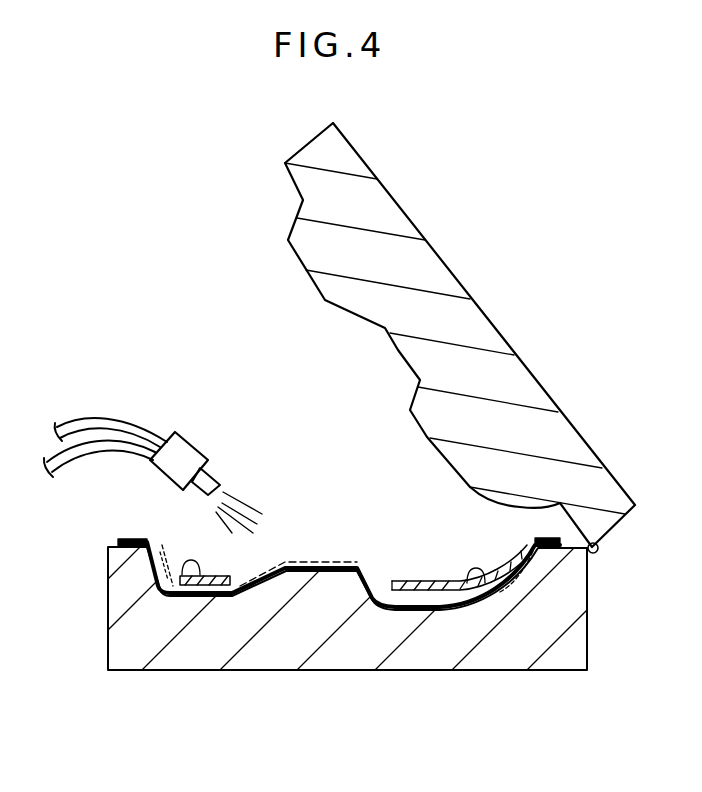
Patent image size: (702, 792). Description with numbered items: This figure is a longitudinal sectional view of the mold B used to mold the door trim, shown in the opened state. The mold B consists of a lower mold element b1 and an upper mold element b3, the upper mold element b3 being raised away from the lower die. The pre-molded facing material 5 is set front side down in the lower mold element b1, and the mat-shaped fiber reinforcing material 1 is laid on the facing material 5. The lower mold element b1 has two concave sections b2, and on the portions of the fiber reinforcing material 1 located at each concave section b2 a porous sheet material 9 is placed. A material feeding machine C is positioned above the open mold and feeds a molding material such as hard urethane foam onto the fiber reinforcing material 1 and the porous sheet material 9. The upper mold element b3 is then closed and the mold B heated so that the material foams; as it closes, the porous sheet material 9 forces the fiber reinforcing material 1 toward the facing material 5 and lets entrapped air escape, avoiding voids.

The mold B is at (337, 439).
The lower mold element b1 is at (427, 655).
The concave sections b2 is at (177, 590).
The upper mold element b3 is at (470, 327).
The fiber reinforcing material 1 is at (333, 557).
The facing material 5 is at (318, 578).
The porous sheet material 9 is at (205, 567).
The material feeding machine C is at (183, 450).